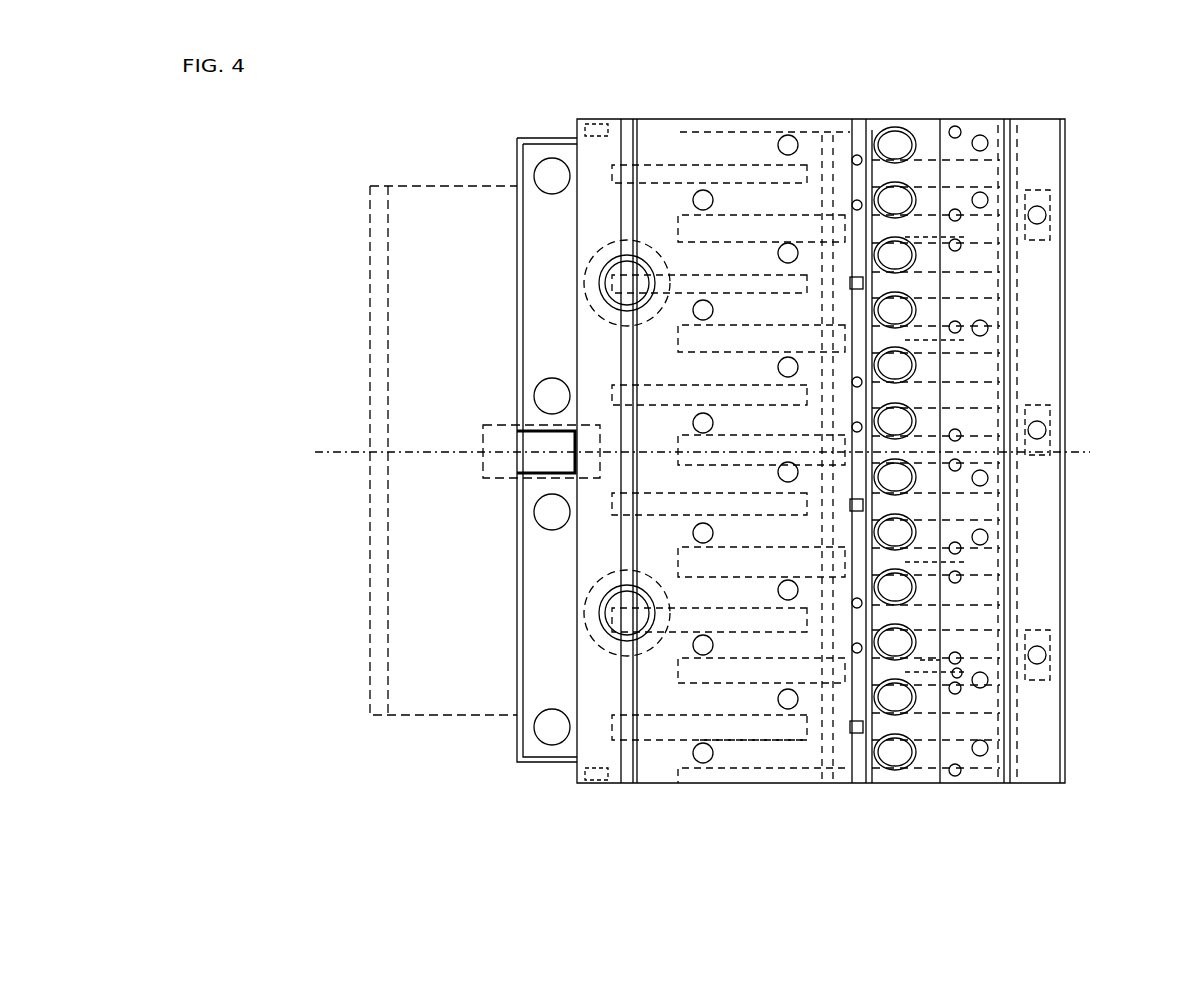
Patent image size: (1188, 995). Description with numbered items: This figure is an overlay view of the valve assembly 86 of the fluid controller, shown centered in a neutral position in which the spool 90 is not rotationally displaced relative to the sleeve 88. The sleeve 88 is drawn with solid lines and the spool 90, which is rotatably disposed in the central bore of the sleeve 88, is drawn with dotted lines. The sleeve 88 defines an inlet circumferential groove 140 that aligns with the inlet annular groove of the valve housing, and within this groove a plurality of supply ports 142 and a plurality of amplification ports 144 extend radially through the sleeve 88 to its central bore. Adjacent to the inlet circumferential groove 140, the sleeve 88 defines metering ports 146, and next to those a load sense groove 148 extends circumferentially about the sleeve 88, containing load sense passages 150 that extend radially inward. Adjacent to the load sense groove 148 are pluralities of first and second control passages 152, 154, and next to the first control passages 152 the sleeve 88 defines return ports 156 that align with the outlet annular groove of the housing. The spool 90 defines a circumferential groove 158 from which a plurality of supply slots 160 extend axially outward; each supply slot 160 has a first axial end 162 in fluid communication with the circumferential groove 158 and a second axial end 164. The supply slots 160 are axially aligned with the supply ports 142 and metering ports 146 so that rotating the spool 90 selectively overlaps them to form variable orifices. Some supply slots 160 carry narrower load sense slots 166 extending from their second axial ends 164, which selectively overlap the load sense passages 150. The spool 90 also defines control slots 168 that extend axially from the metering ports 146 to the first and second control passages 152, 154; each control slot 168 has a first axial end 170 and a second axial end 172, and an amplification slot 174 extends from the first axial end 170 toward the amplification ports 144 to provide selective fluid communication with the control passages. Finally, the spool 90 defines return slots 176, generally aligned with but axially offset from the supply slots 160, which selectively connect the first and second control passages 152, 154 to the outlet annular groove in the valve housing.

The valve assembly 86 is at (299, 149).
The sleeve 88 is at (1035, 112).
The spool 90 is at (433, 182).
The inlet circumferential groove 140 is at (1003, 162).
The supply ports 142 is at (980, 135).
The amplification ports 144 is at (953, 126).
The metering ports 146 is at (890, 126).
The load sense groove 148 is at (888, 130).
The load sense passages 150 is at (853, 276).
The first control passages 152 is at (700, 192).
The second control passages 154 is at (786, 136).
The return ports 156 is at (548, 158).
The circumferential groove 158 is at (1012, 702).
The supply slots 160 is at (938, 742).
The first axial end 162 is at (1010, 740).
The second axial end 164 is at (853, 732).
The load sense slots 166 is at (832, 744).
The control slots 168 is at (758, 690).
The first axial end 170 is at (944, 660).
The second axial end 172 is at (674, 682).
The amplification slot 174 is at (962, 672).
The return slots 176 is at (684, 742).